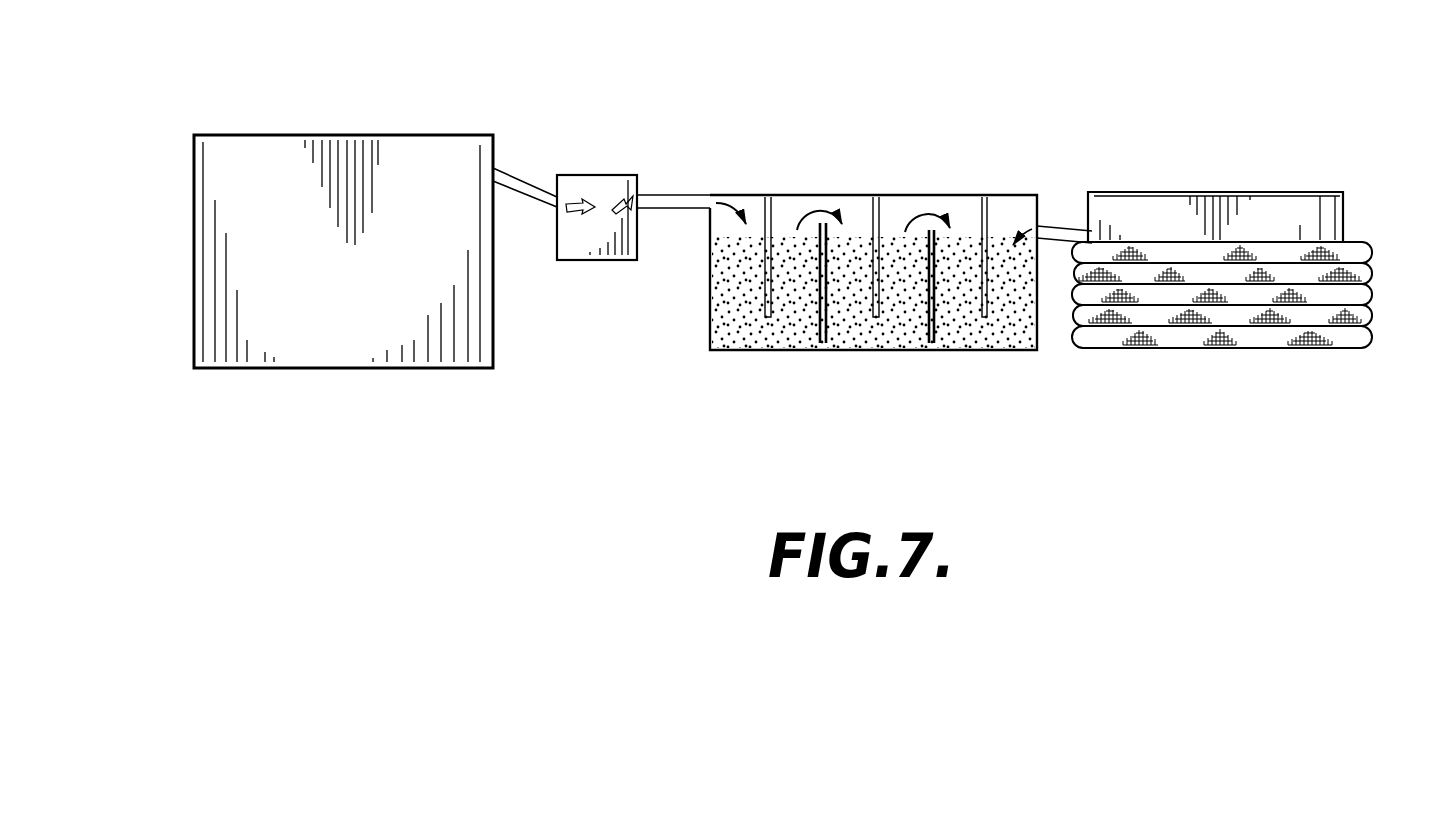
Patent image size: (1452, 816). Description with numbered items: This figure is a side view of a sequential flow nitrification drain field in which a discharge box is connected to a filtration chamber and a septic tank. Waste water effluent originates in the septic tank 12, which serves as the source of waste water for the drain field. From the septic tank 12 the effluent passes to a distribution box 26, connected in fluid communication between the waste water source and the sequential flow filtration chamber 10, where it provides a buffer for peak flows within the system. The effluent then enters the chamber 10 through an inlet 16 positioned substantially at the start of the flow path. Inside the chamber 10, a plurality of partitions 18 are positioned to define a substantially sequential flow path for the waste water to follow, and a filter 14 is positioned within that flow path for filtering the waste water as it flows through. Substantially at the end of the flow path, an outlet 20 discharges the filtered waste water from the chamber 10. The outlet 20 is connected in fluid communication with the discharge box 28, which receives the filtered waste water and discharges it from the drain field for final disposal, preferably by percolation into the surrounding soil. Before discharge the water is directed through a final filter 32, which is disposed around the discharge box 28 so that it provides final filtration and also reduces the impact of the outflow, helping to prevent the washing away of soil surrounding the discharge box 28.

The sequential flow filtration chamber 10 is at (925, 123).
The septic tank 12 is at (340, 118).
The filter 14 is at (1017, 310).
The inlet 16 is at (677, 195).
The partition 18 is at (767, 199).
The outlet 20 is at (1057, 225).
The distribution box 26 is at (587, 173).
The discharge box 28 is at (1192, 185).
The final filter 32 is at (1283, 333).